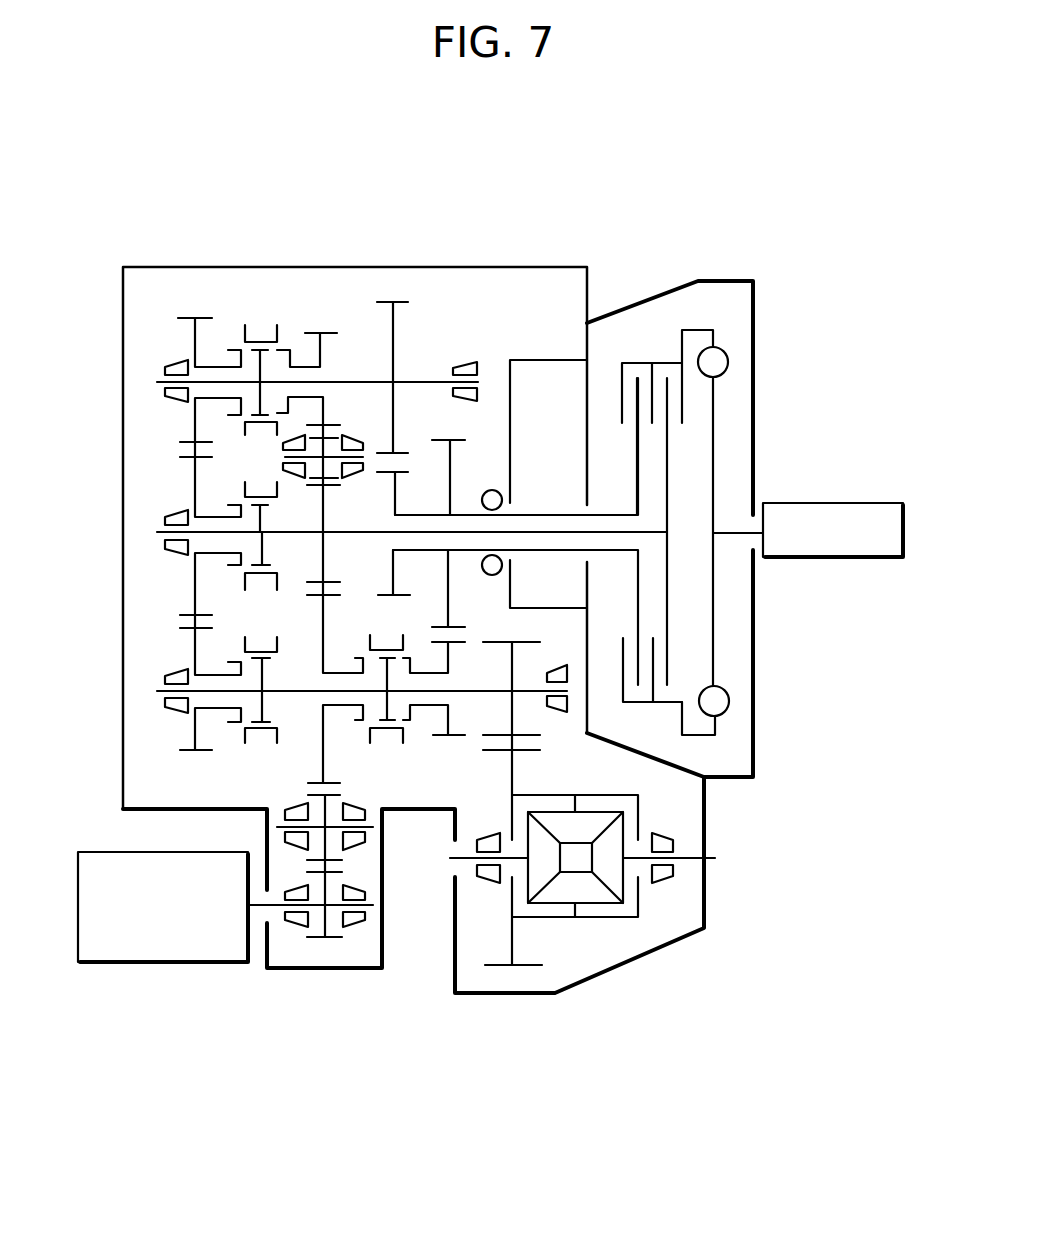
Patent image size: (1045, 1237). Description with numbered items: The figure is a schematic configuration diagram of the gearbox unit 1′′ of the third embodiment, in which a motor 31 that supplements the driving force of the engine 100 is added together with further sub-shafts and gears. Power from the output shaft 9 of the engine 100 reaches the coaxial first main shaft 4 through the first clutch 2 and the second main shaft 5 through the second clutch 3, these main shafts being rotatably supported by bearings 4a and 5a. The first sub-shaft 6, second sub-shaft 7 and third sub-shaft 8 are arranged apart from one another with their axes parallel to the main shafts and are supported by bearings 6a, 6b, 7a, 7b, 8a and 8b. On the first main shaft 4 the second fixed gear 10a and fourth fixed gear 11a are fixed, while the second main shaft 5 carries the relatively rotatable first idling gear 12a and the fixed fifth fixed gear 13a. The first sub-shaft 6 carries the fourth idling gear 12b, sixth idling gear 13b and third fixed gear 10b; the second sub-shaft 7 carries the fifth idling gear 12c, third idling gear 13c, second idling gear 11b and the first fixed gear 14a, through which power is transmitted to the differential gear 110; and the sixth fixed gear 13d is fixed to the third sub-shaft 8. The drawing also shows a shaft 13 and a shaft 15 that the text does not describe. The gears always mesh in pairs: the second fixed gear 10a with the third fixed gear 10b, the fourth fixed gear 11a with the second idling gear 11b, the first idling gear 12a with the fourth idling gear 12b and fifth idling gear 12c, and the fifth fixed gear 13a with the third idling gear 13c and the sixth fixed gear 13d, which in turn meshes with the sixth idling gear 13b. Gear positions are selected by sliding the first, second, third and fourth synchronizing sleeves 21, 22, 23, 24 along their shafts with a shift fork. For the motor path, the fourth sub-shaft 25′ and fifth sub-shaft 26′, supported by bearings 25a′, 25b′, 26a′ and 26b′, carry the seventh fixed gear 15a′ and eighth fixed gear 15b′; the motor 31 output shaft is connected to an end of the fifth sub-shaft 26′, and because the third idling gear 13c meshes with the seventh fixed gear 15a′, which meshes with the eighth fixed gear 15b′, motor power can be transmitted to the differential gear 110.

The gearbox unit 1′′ is at (657, 218).
The first clutch 2 is at (634, 362).
The second clutch 3 is at (664, 362).
The first main shaft 4 is at (613, 513).
The bearing 4a is at (488, 490).
The second main shaft 5 is at (553, 530).
The bearing 5a is at (176, 516).
The first sub-shaft 6 is at (414, 380).
The bearing 6a is at (468, 362).
The bearing 6b is at (176, 402).
The second sub-shaft 7 is at (474, 689).
The bearing 7a is at (556, 710).
The bearing 7b is at (176, 714).
The third sub-shaft 8 is at (332, 440).
The bearing 8a is at (358, 442).
The bearing 8b is at (282, 456).
The output shaft 9 is at (732, 530).
The second fixed gear 10a is at (400, 474).
The third fixed gear 10b is at (408, 302).
The fourth fixed gear 11a is at (446, 438).
The second idling gear 11b is at (444, 737).
The first idling gear 12a is at (186, 613).
The fourth idling gear 12b is at (190, 317).
The fifth idling gear 12c is at (192, 752).
The shaft 13 is at (320, 590).
The fifth fixed gear 13a is at (338, 487).
The sixth idling gear 13b is at (318, 332).
The third idling gear 13c is at (316, 782).
The sixth fixed gear 13d is at (304, 486).
The first fixed gear 14a is at (540, 641).
The shaft 15 is at (324, 866).
The seventh fixed gear 15a′ is at (342, 868).
The eighth fixed gear 15b′ is at (326, 940).
The first synchronizing sleeve 21 is at (262, 578).
The second synchronizing sleeve 22 is at (388, 738).
The third synchronizing sleeve 23 is at (256, 340).
The fourth synchronizing sleeve 24 is at (256, 738).
The fourth sub-shaft 25′ is at (365, 836).
The bearing 25a′ is at (366, 815).
The bearing 25b′ is at (283, 818).
The fifth sub-shaft 26′ is at (366, 905).
The bearing 26a′ is at (356, 928).
The bearing 26b′ is at (292, 928).
The motor 31 is at (120, 963).
The engine 100 is at (874, 502).
The differential gear 110 is at (594, 918).